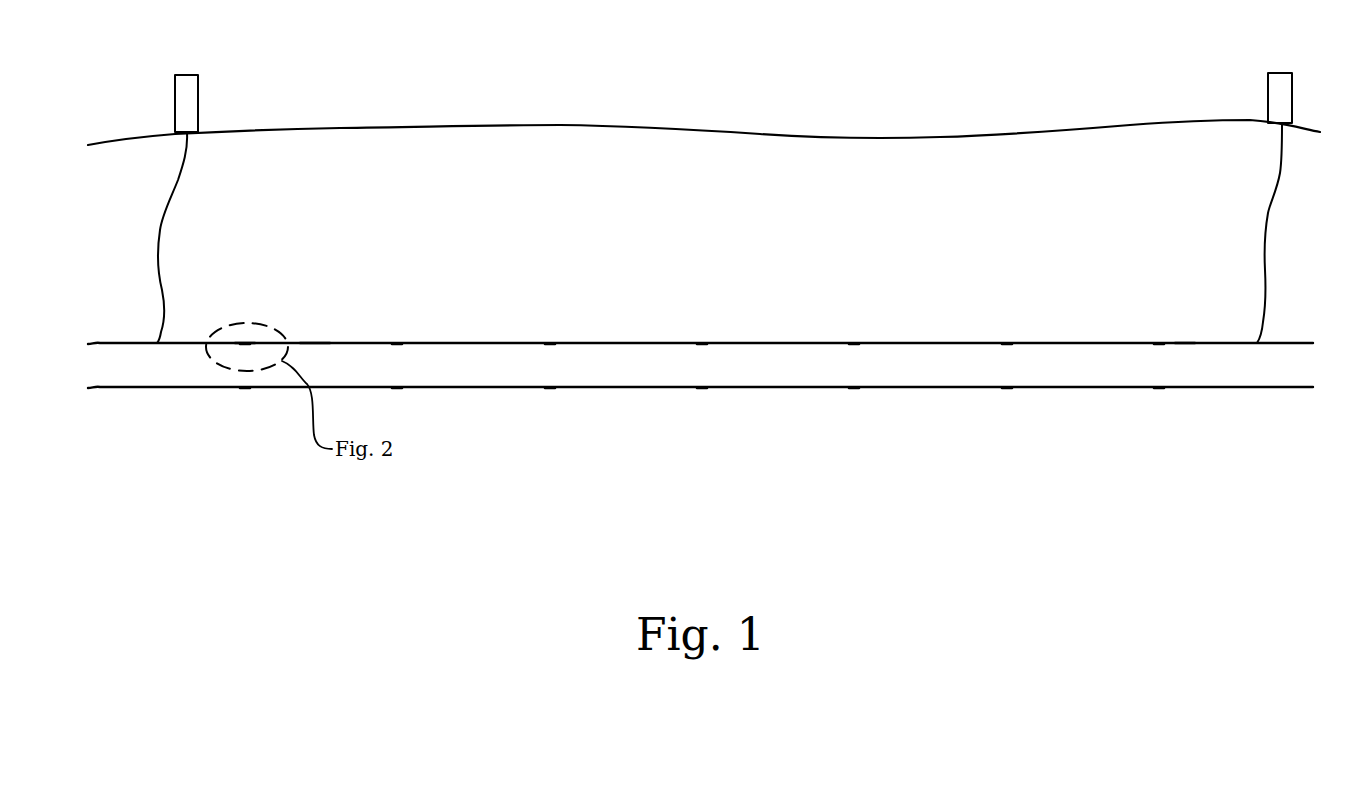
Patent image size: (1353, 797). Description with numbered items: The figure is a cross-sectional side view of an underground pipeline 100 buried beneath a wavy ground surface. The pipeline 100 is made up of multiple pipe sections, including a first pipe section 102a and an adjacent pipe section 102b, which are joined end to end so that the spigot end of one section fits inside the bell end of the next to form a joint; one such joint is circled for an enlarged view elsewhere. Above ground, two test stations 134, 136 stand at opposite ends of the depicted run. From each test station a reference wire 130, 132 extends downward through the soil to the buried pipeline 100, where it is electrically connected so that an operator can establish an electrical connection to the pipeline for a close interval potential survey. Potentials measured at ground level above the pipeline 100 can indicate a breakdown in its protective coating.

The underground pipeline 100 is at (772, 420).
The first pipe section 102a is at (180, 343).
The adjacent pipe section 102b is at (315, 343).
The reference wire 130 is at (158, 228).
The reference wire 132 is at (1268, 216).
The test station 134 is at (185, 99).
The test station 136 is at (1277, 89).